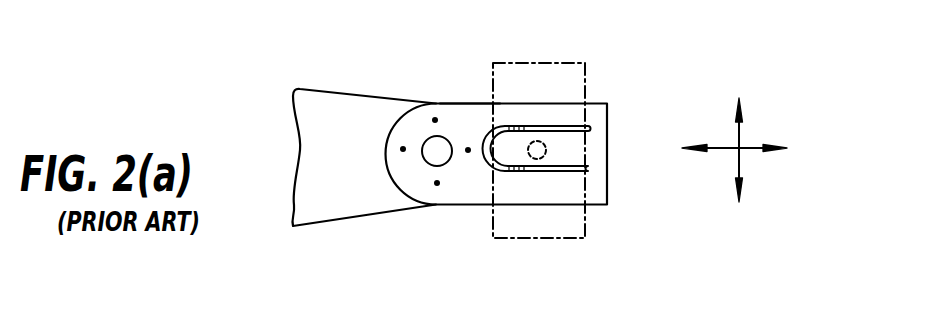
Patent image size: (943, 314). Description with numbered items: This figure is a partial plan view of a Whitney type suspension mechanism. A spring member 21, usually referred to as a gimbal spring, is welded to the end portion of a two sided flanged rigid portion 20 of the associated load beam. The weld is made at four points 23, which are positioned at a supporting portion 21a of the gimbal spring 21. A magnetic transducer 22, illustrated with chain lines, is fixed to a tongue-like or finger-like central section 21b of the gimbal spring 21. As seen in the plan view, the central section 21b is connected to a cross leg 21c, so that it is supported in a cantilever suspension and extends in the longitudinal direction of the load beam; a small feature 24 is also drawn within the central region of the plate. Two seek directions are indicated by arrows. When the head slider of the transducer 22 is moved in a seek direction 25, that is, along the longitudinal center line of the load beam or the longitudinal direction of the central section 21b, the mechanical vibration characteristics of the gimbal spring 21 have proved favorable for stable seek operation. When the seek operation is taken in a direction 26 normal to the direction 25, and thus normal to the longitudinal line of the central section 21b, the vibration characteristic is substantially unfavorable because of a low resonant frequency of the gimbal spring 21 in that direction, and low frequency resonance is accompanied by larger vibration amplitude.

The rigid portion 20 is at (332, 89).
The spring member 21 is at (612, 121).
The supporting portion 21a is at (472, 103).
The central section 21b is at (533, 168).
The cross leg 21c is at (593, 148).
The magnetic transducer 22 is at (560, 60).
The points 23 is at (437, 185).
The pin (phantom) 24 is at (540, 158).
The seek direction 25 is at (758, 150).
The seek direction 26 is at (741, 135).